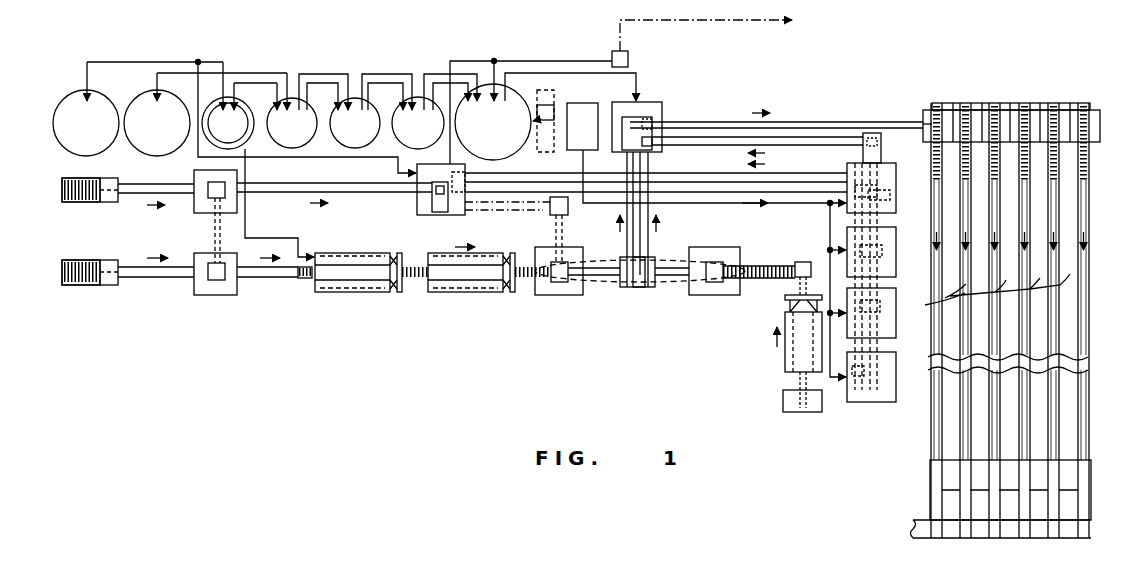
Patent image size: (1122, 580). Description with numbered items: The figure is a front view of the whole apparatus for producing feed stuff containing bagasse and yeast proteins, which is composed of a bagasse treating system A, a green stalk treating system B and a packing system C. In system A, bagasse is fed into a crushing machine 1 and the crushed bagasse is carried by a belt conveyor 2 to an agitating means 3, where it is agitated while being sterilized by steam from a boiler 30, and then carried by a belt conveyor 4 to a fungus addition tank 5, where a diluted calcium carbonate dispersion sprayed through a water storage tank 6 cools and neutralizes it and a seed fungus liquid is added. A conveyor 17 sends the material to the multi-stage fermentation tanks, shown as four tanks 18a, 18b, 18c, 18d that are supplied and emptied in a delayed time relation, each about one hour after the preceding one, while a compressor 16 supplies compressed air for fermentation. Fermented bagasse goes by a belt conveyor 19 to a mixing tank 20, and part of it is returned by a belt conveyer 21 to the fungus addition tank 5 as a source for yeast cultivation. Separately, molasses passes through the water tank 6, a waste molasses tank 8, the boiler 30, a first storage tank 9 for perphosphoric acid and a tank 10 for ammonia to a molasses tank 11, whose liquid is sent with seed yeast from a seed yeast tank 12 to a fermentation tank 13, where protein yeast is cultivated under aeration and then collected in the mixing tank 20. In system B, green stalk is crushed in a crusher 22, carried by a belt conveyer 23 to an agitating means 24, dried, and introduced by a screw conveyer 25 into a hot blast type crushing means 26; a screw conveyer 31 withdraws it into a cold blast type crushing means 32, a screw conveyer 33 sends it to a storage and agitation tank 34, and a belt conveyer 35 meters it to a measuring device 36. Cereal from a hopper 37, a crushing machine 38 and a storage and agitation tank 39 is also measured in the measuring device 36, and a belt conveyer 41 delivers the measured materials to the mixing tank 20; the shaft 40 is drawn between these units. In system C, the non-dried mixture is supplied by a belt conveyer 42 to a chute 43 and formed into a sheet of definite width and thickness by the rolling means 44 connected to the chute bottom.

The crushing machine 1 is at (120, 203).
The belt conveyor 2 is at (174, 196).
The agitating means 3 is at (222, 206).
The belt conveyor 4 is at (356, 196).
The fungus addition tank 5 is at (421, 215).
The water storage tank 6 is at (138, 108).
The waste molasses tank 8 is at (205, 114).
The first storage tank for perphosphoric acid 9 is at (307, 111).
The tank for ammonia 10 is at (371, 111).
The molasses tank 11 is at (434, 111).
The seed yeast tank 12 is at (612, 53).
The fermentation tank 13 is at (543, 112).
The compressor 16 is at (582, 126).
The conveyor 17 is at (724, 198).
The fermentation tank 18a is at (862, 402).
The fermentation tank 18b is at (896, 330).
The fermentation tank 18c is at (846, 240).
The fermentation tank 18d is at (910, 160).
The belt conveyor 19 is at (714, 145).
The mixing tank 20 is at (660, 108).
The belt conveyer 21 is at (780, 171).
The crusher 22 is at (118, 287).
The belt conveyer 23 is at (166, 282).
The agitating means 24 is at (238, 296).
The screw conveyer 25 is at (301, 282).
The hot blast type crushing means 26 is at (350, 293).
The boiler 30 is at (307, 159).
The screw conveyer 31 is at (414, 292).
The cold blast type crushing means 32 is at (465, 292).
The screw conveyer 33 is at (523, 292).
The storage and agitation tank 34 is at (566, 296).
The belt conveyer 35 is at (614, 288).
The measuring device 36 is at (657, 288).
The hopper 37 is at (783, 401).
The crushing machine 38 is at (785, 352).
The storage and agitation tank 39 is at (738, 299).
The shaft 40 is at (665, 268).
The belt conveyer 41 is at (648, 212).
The belt conveyer 42 is at (735, 121).
The chute 43 is at (983, 103).
The rolling means 44 is at (984, 292).
The bagasse treating system A is at (99, 208).
The green stalk treating system B is at (99, 290).
The packing system C is at (790, 121).